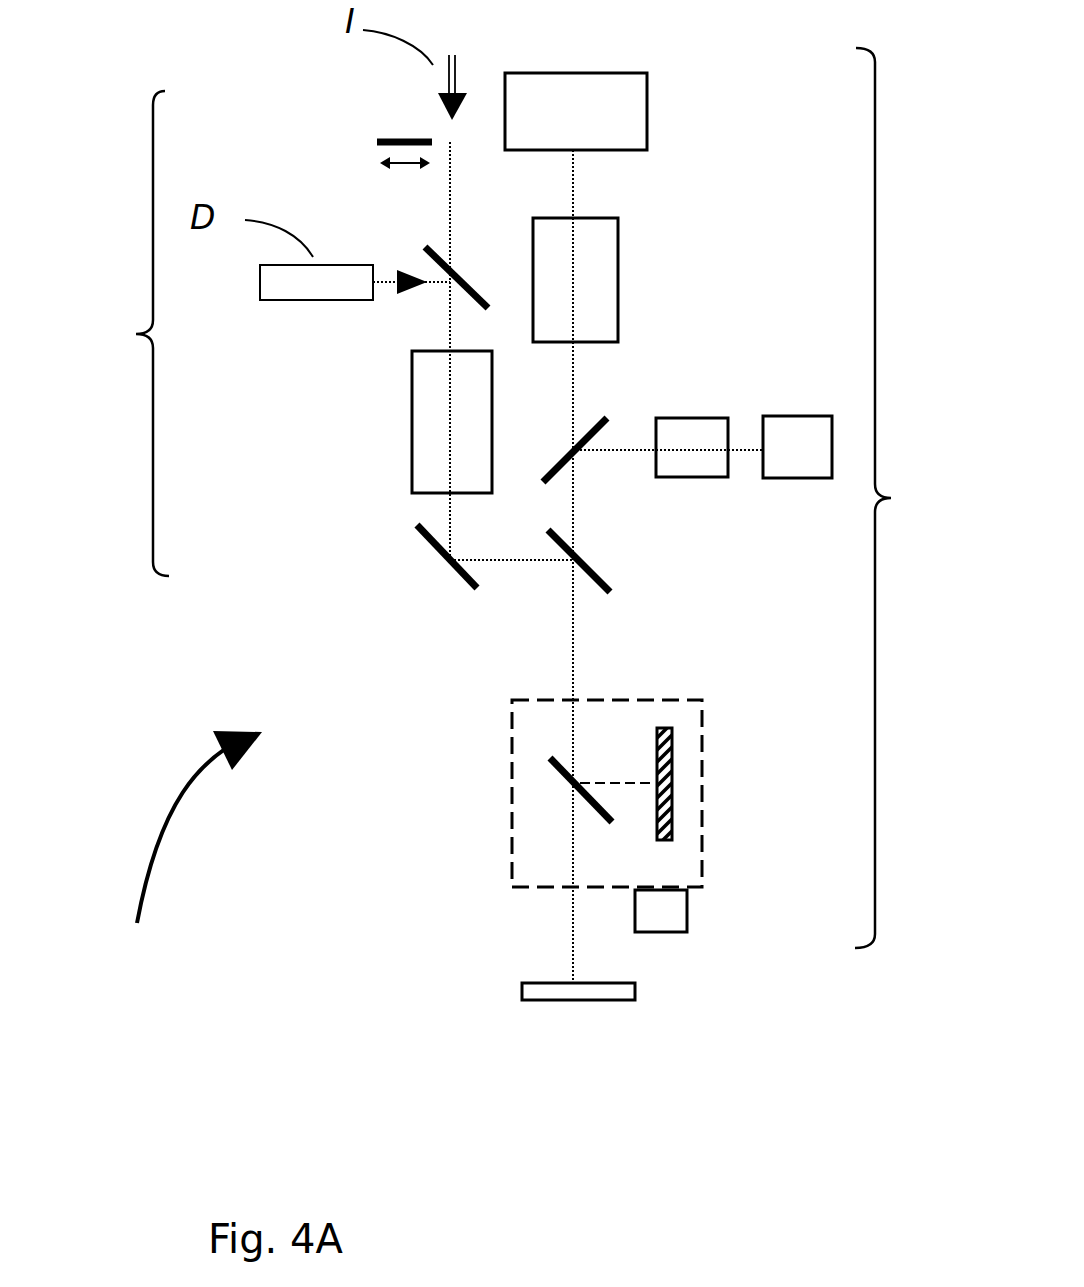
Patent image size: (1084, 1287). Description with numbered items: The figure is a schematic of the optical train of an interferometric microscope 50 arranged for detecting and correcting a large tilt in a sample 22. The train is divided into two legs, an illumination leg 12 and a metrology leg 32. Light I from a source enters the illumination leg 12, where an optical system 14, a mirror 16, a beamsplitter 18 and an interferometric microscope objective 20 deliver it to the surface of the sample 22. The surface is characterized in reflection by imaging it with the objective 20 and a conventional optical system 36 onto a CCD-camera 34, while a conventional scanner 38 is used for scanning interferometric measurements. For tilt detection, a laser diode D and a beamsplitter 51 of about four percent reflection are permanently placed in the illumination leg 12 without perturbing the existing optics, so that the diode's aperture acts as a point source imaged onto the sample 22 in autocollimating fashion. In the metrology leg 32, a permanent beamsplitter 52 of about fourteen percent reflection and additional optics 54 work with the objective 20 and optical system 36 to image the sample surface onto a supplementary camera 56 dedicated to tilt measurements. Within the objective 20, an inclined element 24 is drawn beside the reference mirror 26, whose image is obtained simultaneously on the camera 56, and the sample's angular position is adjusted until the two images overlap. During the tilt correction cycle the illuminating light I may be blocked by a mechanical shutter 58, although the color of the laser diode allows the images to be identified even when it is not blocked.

The illumination leg 12 is at (121, 333).
The optical system 14 is at (405, 398).
The mirror 16 is at (410, 535).
The beamsplitter 18 is at (607, 568).
The interferometric microscope objective 20 is at (707, 792).
The sample 22 is at (535, 978).
The beam splitter mirror 24 is at (550, 758).
The reference mirror 26 is at (665, 725).
The metrology leg 32 is at (908, 498).
The CCD-camera 34 is at (632, 92).
The optical system 36 is at (602, 235).
The scanner 38 is at (680, 915).
The interferometric microscope 50 is at (183, 865).
The beamsplitter 51 is at (420, 235).
The beamsplitter 52 is at (590, 427).
The additional optics 54 is at (703, 418).
The supplementary camera 56 is at (777, 422).
The mechanical shutter 58 is at (388, 128).